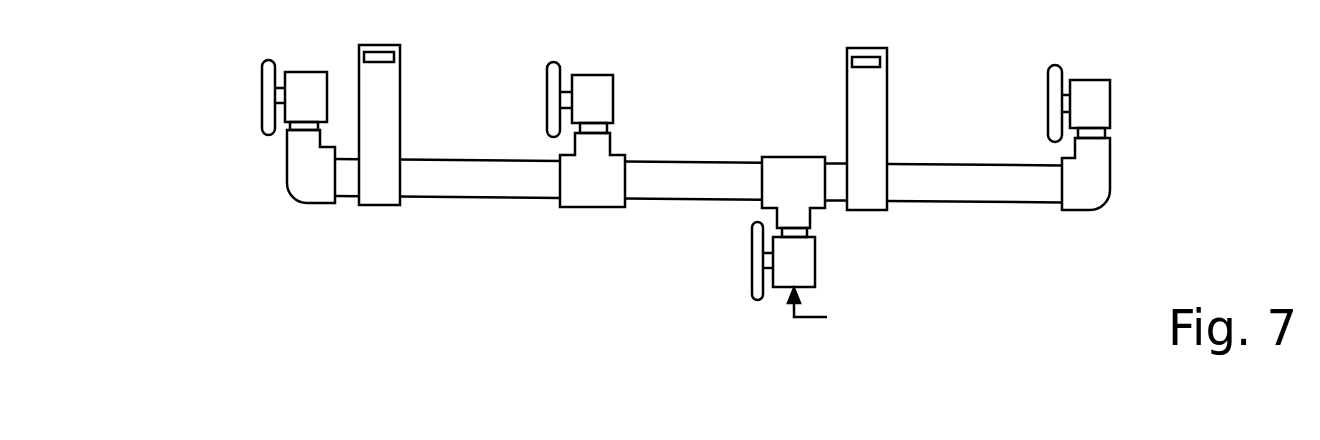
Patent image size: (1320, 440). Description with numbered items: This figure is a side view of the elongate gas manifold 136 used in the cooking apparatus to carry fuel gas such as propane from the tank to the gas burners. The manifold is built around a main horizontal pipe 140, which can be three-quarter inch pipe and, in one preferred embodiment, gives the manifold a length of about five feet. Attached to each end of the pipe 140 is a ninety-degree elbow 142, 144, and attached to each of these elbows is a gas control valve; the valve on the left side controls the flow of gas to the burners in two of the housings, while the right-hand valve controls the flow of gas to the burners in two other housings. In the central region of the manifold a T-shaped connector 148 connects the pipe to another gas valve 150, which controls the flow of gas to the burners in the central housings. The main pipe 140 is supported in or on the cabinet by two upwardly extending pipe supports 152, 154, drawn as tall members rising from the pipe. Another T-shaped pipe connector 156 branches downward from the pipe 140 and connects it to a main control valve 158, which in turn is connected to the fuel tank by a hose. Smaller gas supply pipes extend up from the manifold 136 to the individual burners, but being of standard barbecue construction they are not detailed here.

The gas manifold 136 is at (473, 148).
The main horizontal pipe 140 is at (688, 162).
The elbow 142 is at (313, 187).
The elbow 144 is at (1085, 193).
The T-shaped connector 148 is at (612, 162).
The gas valve 150 is at (585, 87).
The pipe support 152 is at (388, 112).
The pipe support 154 is at (873, 117).
The T-shaped pipe connector 156 is at (793, 168).
The main control valve 158 is at (805, 257).